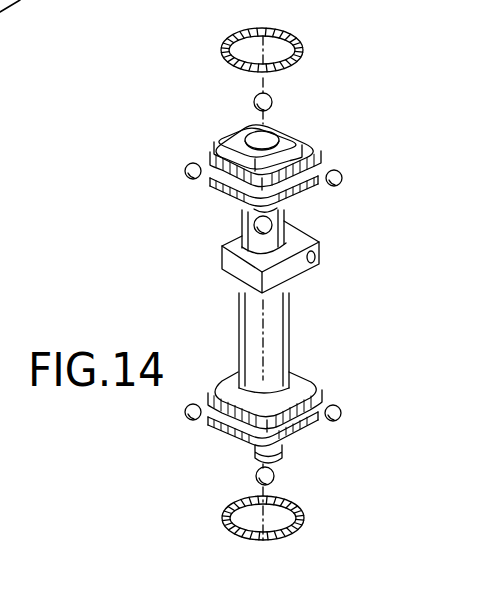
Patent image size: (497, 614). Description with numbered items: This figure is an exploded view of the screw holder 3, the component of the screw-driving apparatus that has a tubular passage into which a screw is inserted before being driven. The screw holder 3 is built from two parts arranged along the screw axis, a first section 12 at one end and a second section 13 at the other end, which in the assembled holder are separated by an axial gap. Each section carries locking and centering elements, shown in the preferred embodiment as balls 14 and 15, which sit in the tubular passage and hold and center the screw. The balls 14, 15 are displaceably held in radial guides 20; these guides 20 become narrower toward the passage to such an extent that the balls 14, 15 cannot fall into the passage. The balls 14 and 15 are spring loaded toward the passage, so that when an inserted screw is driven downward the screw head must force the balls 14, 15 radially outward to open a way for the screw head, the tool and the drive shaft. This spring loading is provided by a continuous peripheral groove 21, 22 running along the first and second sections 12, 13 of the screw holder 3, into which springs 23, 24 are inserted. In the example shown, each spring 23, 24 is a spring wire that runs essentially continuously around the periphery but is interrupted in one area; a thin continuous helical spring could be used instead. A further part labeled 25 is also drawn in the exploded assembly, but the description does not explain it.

The screw holder 3 is at (315, 337).
The first section 12 is at (328, 128).
The second section 13 is at (325, 437).
The ball 14 is at (343, 178).
The ball 15 is at (342, 411).
The radial guide 20 is at (250, 210).
The peripheral groove 21 is at (322, 192).
The peripheral groove 22 is at (308, 428).
The spring 23 is at (300, 44).
The spring 24 is at (278, 545).
The block 25 is at (322, 258).